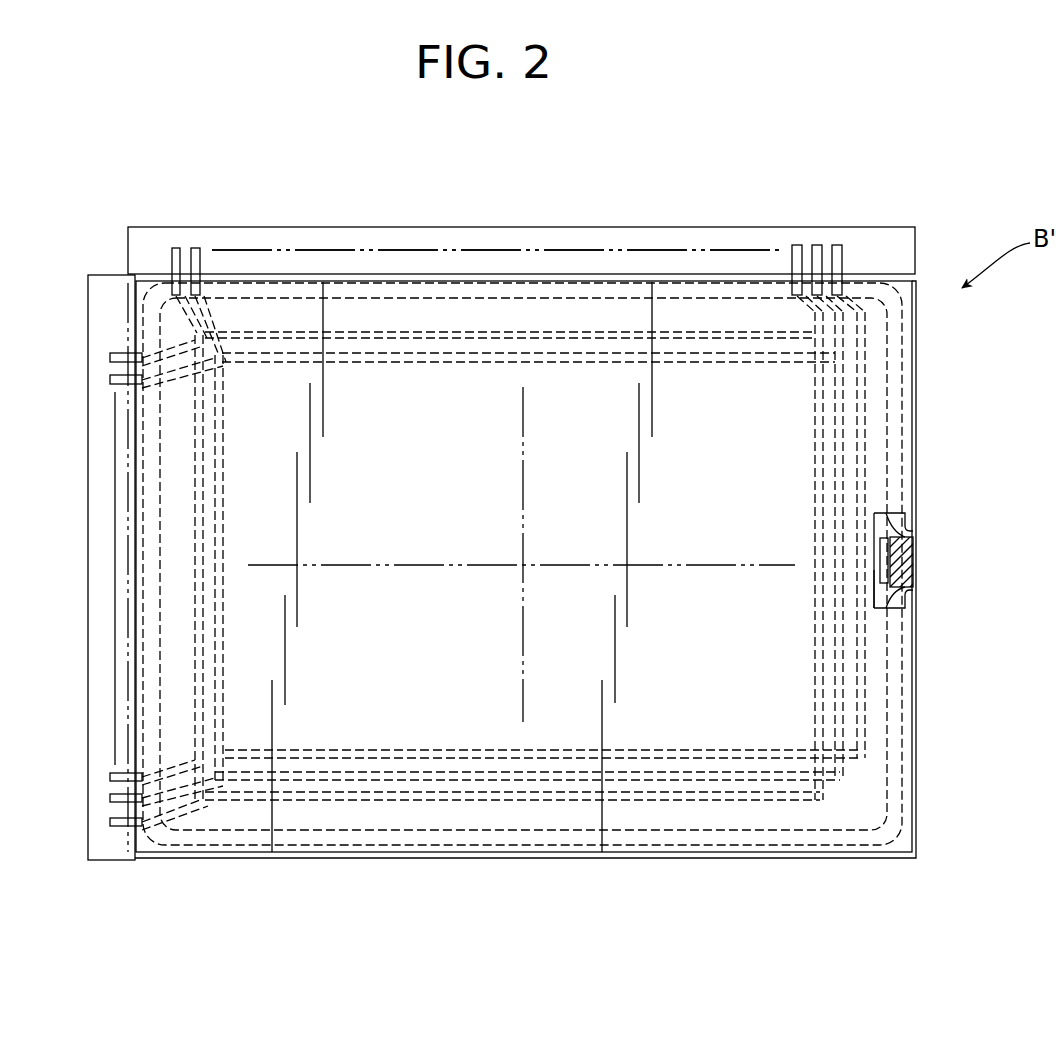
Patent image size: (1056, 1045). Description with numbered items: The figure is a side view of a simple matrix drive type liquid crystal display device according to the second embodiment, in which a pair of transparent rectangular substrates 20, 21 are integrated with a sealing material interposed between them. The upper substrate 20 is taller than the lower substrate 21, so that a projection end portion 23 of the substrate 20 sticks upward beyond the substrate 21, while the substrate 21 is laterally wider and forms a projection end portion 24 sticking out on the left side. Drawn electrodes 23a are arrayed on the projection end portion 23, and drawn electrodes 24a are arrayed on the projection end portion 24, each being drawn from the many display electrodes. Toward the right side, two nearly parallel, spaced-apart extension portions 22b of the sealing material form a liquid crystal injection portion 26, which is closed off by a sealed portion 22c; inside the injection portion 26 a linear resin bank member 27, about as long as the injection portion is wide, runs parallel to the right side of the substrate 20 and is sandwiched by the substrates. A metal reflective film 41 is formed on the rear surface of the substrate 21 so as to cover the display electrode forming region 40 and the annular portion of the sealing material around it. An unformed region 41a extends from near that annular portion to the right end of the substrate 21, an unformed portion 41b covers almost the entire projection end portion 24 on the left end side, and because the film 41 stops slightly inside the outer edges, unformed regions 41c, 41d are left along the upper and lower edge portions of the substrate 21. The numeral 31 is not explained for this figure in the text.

The substrate 20 is at (742, 227).
The substrate 21 is at (915, 766).
The extension portions 22b is at (915, 517).
The sealed portion 22c is at (913, 562).
The projection end portion 23 is at (573, 240).
The drawn electrodes 23a is at (195, 248).
The projection end portion 24 is at (103, 490).
The drawn electrodes 24a is at (112, 358).
The liquid crystal injection portion 26 is at (878, 592).
The bank member 27 is at (890, 558).
The electrode lines 31 is at (678, 402).
The display electrode forming region 40 is at (440, 694).
The metal reflective film 41 is at (568, 718).
The unformed region 41a is at (932, 502).
The unformed portion 41b is at (110, 328).
The unformed region 41c is at (467, 272).
The unformed region 41d is at (313, 852).